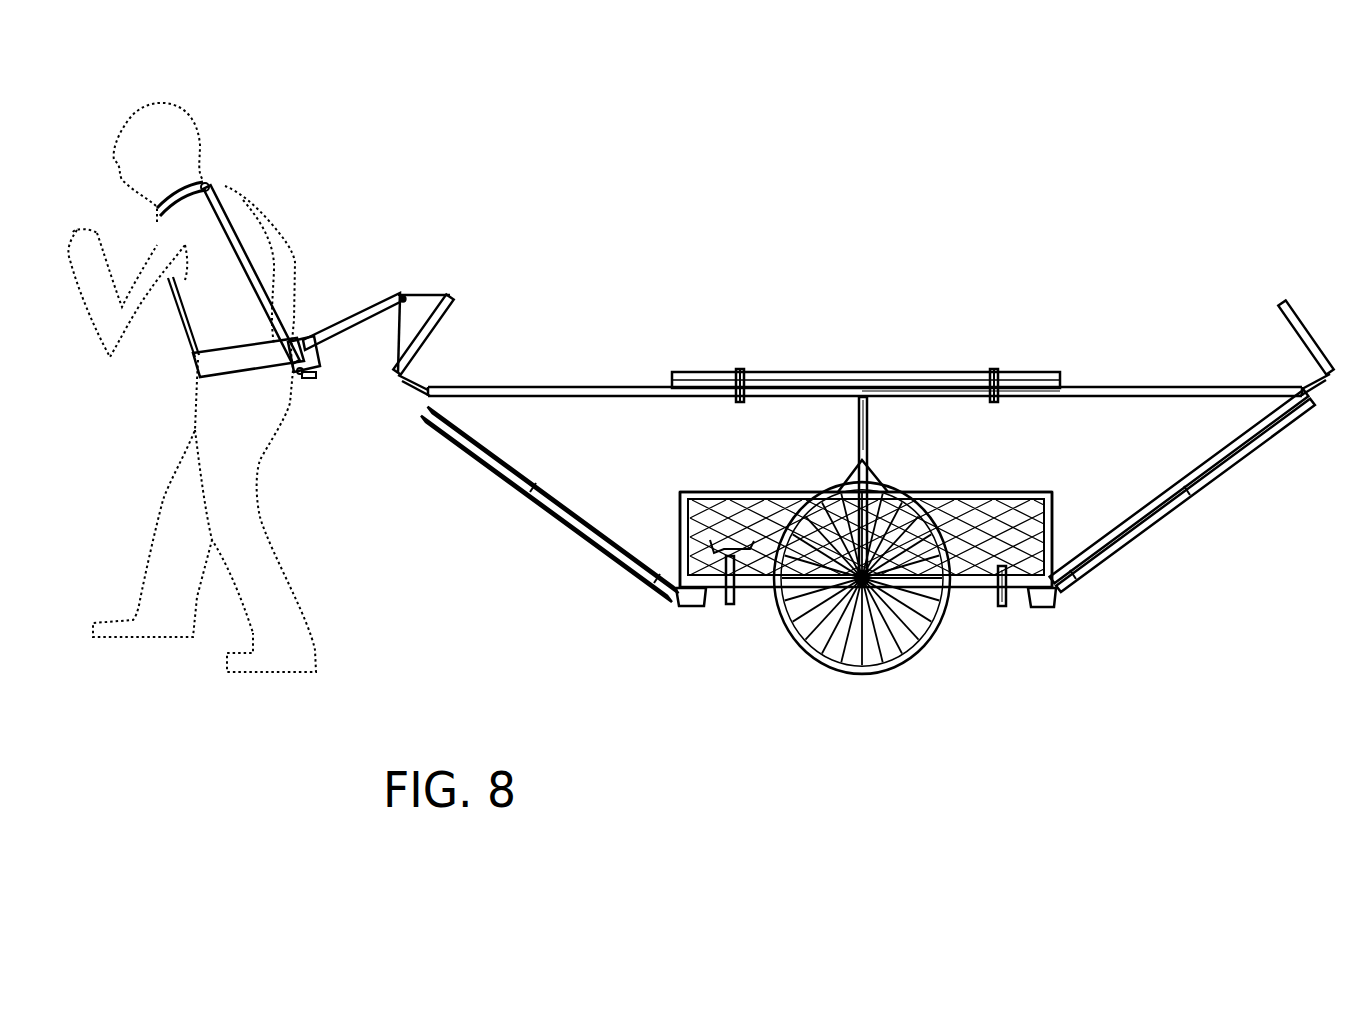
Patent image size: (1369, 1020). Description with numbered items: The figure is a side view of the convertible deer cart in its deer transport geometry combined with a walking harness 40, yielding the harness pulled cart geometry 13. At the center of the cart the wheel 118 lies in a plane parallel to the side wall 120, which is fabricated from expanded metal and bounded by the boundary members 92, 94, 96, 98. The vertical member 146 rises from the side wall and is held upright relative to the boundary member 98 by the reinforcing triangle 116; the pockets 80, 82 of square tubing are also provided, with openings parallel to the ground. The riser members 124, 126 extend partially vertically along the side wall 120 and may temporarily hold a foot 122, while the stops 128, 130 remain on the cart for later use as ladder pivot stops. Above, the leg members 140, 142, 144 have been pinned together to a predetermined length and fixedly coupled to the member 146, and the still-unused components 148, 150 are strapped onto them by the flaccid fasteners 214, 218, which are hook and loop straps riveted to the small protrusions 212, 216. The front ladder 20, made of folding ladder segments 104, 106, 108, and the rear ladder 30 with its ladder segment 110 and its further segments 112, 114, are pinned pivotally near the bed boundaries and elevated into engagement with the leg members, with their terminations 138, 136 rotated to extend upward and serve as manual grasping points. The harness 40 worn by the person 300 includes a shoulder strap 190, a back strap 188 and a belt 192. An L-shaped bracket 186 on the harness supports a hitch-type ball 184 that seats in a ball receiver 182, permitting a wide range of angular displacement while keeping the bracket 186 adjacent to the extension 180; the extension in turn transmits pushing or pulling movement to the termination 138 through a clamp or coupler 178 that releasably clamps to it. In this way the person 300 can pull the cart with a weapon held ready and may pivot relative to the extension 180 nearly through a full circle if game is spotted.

The harness pulled cart geometry 13 is at (863, 421).
The ladder 20 is at (549, 504).
The ladder 30 is at (1189, 491).
The walking harness 40 is at (293, 284).
The pocket 80 is at (1048, 500).
The pocket 82 is at (675, 505).
The boundary member 92 is at (962, 597).
The boundary member 94 is at (676, 517).
The boundary member 96 is at (1053, 532).
The boundary member 98 is at (997, 510).
The ladder segment 104 is at (513, 447).
The ladder segment 106 is at (547, 468).
The ladder segment 108 is at (570, 536).
The ladder segment 110 is at (1180, 482).
The lower right rail 112 is at (1210, 480).
The right rail coupling 114 is at (1263, 452).
The reinforcing triangle 116 is at (880, 472).
The wheel 118 is at (940, 643).
The side wall 120 is at (1033, 490).
The foot 122 is at (735, 540).
The riser member 124 is at (740, 603).
The riser member 126 is at (1012, 605).
The stop 128 is at (1057, 603).
The stop 130 is at (687, 607).
The termination 136 is at (1297, 328).
The termination 138 is at (447, 327).
The leg member 140 is at (580, 390).
The leg member 142 is at (1170, 390).
The leg member 144 is at (913, 396).
The member 146 is at (860, 415).
The unused component 148 is at (783, 375).
The unused component 150 is at (875, 372).
The coupler 178 is at (427, 294).
The extension 180 is at (337, 327).
The ball receiver 182 is at (312, 358).
The ball 184 is at (315, 378).
The L-shaped bracket 186 is at (306, 372).
The back strap 188 is at (240, 247).
The shoulder strap 190 is at (205, 183).
The belt 192 is at (193, 363).
The small protrusion 212 is at (738, 383).
The flaccid fastener 214 is at (745, 372).
The small protrusion 216 is at (1013, 378).
The flaccid fastener 218 is at (1007, 383).
The person 300 is at (237, 528).